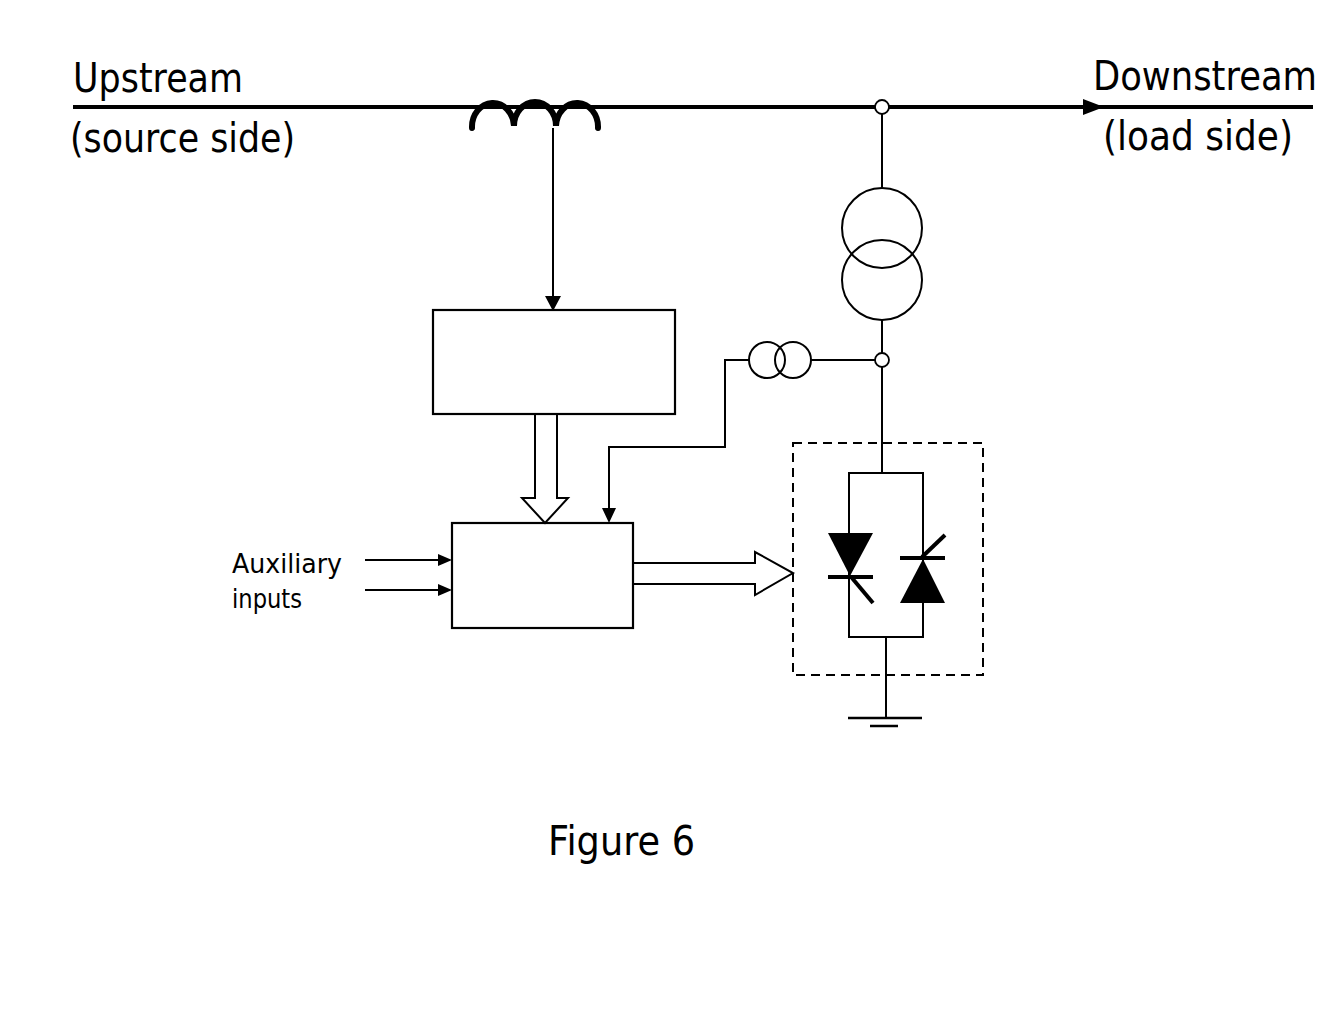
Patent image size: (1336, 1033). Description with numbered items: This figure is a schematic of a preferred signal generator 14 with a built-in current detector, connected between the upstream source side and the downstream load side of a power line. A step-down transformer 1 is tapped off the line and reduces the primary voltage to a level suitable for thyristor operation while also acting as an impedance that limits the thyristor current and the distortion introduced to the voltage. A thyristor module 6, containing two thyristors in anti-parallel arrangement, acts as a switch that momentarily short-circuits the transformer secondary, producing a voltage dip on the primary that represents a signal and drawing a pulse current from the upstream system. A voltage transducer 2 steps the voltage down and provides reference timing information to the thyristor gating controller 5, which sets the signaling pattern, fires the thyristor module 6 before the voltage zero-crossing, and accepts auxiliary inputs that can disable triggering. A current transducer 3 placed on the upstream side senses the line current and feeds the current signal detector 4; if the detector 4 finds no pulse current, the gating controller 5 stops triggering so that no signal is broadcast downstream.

The step-down transformer 1 is at (907, 233).
The voltage transducer 2 is at (738, 432).
The current transducer 3 is at (547, 87).
The current signal detector 4 is at (526, 325).
The thyristor gating controller 5 is at (622, 611).
The thyristor module 6 is at (907, 546).
The signal generator 14 is at (1100, 394).